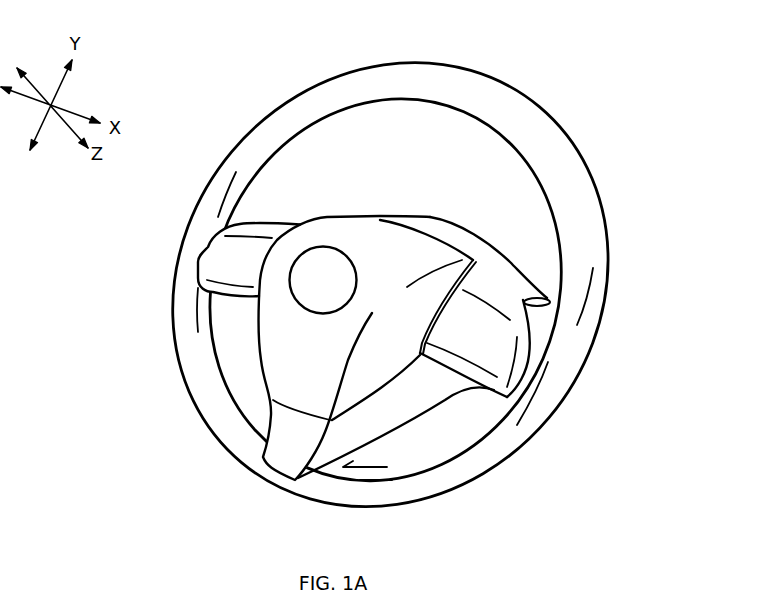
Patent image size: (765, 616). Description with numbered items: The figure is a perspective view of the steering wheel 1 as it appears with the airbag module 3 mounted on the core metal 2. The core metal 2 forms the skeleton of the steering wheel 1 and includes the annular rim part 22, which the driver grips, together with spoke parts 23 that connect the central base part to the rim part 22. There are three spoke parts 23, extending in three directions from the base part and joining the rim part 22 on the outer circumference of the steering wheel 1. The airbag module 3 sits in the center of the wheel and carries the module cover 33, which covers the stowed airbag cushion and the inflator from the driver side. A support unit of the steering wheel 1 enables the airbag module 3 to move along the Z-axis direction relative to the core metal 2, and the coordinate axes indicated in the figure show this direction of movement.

The steering wheel 1 is at (390, 297).
The core metal 2 is at (390, 297).
The rim part 22 is at (381, 78).
The airbag module 3 is at (303, 315).
The spoke parts 23 is at (218, 260).
The module cover 33 is at (328, 224).